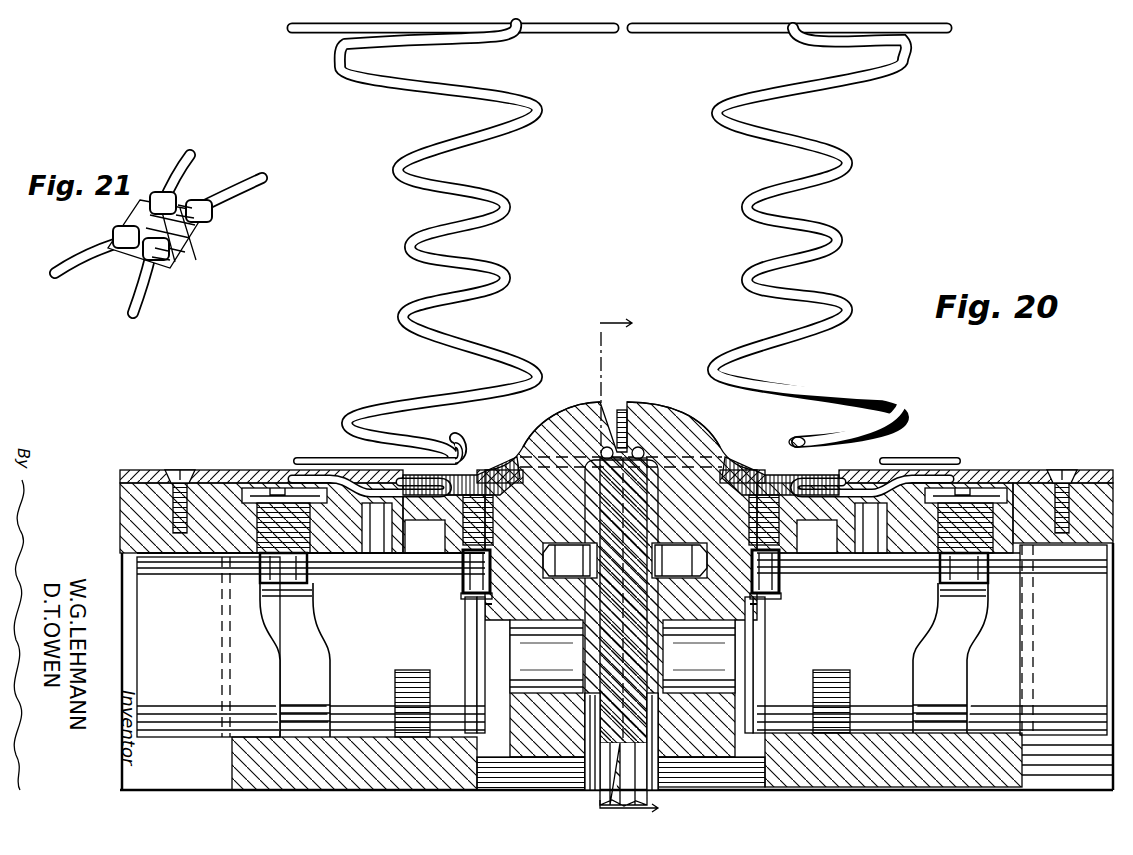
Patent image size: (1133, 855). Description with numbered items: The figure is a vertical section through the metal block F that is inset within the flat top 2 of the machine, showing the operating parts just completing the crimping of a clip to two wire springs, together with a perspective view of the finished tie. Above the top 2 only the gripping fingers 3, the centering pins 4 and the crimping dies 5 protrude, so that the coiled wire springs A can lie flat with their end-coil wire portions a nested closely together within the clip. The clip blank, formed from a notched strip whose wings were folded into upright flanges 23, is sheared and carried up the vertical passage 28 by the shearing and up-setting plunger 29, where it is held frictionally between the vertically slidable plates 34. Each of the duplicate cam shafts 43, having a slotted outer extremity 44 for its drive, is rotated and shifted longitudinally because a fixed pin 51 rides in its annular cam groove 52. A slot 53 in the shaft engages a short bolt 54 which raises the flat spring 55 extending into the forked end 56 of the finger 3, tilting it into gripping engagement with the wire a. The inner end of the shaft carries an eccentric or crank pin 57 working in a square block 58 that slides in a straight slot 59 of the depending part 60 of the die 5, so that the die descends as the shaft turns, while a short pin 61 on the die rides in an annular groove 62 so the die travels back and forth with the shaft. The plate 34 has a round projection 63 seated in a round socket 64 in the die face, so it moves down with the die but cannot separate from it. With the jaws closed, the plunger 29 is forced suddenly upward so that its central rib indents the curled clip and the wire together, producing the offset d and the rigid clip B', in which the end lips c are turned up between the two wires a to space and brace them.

In FIG. 20, the flat top 2 is at (1018, 468).
In FIG. 20, the gripping fingers 3 is at (512, 463).
In FIG. 20, the centering pins 4 is at (622, 408).
In FIG. 20, the crimping dies 5 is at (585, 402).
In FIG. 20, the upright flanges 23 is at (629, 565).
In FIG. 20, the vertical passage 28 is at (603, 636).
In FIG. 20, the shearing and up-setting plunger 29 is at (648, 648).
In FIG. 20, the vertically slidable plates 34 is at (598, 504).
In FIG. 20, the cam shafts 43 is at (625, 615).
In FIG. 20, the slotted outer extremity 44 is at (137, 636).
In FIG. 20, the fixed pin 51 is at (310, 578).
In FIG. 20, the annular cam groove 52 is at (313, 598).
In FIG. 20, the slot 53 is at (395, 680).
In FIG. 20, the short bolt 54 is at (380, 555).
In FIG. 20, the flat spring 55 is at (362, 478).
In FIG. 20, the forked end 56 is at (840, 476).
In FIG. 20, the eccentric or crank pin 57 is at (622, 657).
In FIG. 20, the square block 58 is at (755, 622).
In FIG. 20, the straight slot 59 is at (748, 680).
In FIG. 20, the depending part 60 is at (535, 755).
In FIG. 20, the short pin 61 is at (463, 578).
In FIG. 20, the annular groove 62 is at (461, 597).
In FIG. 20, the round projection 63 is at (625, 560).
In FIG. 20, the round socket 64 is at (480, 608).
In FIG. 20, the coiled wire spring A is at (540, 118).
In FIG. 21, the clip B' is at (142, 234).
In FIG. 20, the clip B' is at (721, 413).
In FIG. 20, the metal block F is at (120, 517).
In FIG. 21, the spring wire portions a is at (192, 165).
In FIG. 20, the spring wire portions a is at (478, 462).
In FIG. 21, the lips or flanges c is at (190, 202).
In FIG. 21, the offset d is at (140, 200).